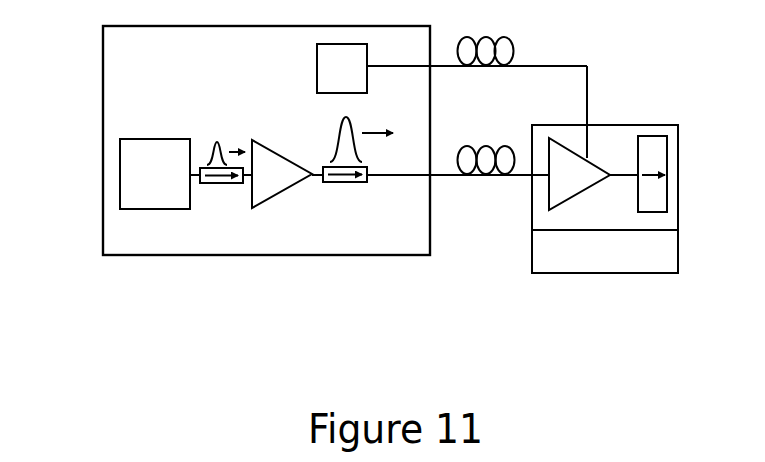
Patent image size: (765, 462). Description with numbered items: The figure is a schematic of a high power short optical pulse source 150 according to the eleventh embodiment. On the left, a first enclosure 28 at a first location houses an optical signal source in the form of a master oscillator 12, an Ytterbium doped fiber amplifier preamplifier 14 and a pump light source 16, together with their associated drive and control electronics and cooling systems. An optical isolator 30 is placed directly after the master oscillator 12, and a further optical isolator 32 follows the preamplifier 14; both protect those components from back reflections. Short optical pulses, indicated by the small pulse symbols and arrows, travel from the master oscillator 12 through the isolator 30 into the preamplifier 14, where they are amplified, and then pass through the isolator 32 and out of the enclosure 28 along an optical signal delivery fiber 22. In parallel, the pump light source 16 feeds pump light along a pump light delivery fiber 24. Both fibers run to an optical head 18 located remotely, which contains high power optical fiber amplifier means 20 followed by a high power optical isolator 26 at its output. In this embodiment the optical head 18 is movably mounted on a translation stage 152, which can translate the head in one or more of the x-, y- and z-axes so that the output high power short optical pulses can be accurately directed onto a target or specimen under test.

The master oscillator 12 is at (147, 177).
The preamplifier 14 is at (270, 178).
The pump light source 16 is at (338, 66).
The optical head 18 is at (620, 125).
The high power optical fiber amplifier means 20 is at (567, 188).
The optical signal delivery fiber 22 is at (447, 175).
The pump light delivery fiber 24 is at (560, 66).
The high power optical isolator 26 is at (655, 136).
The first enclosure 28 is at (370, 255).
The optical isolator 30 is at (218, 184).
The optical isolator 32 is at (342, 182).
The high power short optical pulse source 150 is at (262, 274).
The translation stage 152 is at (605, 257).